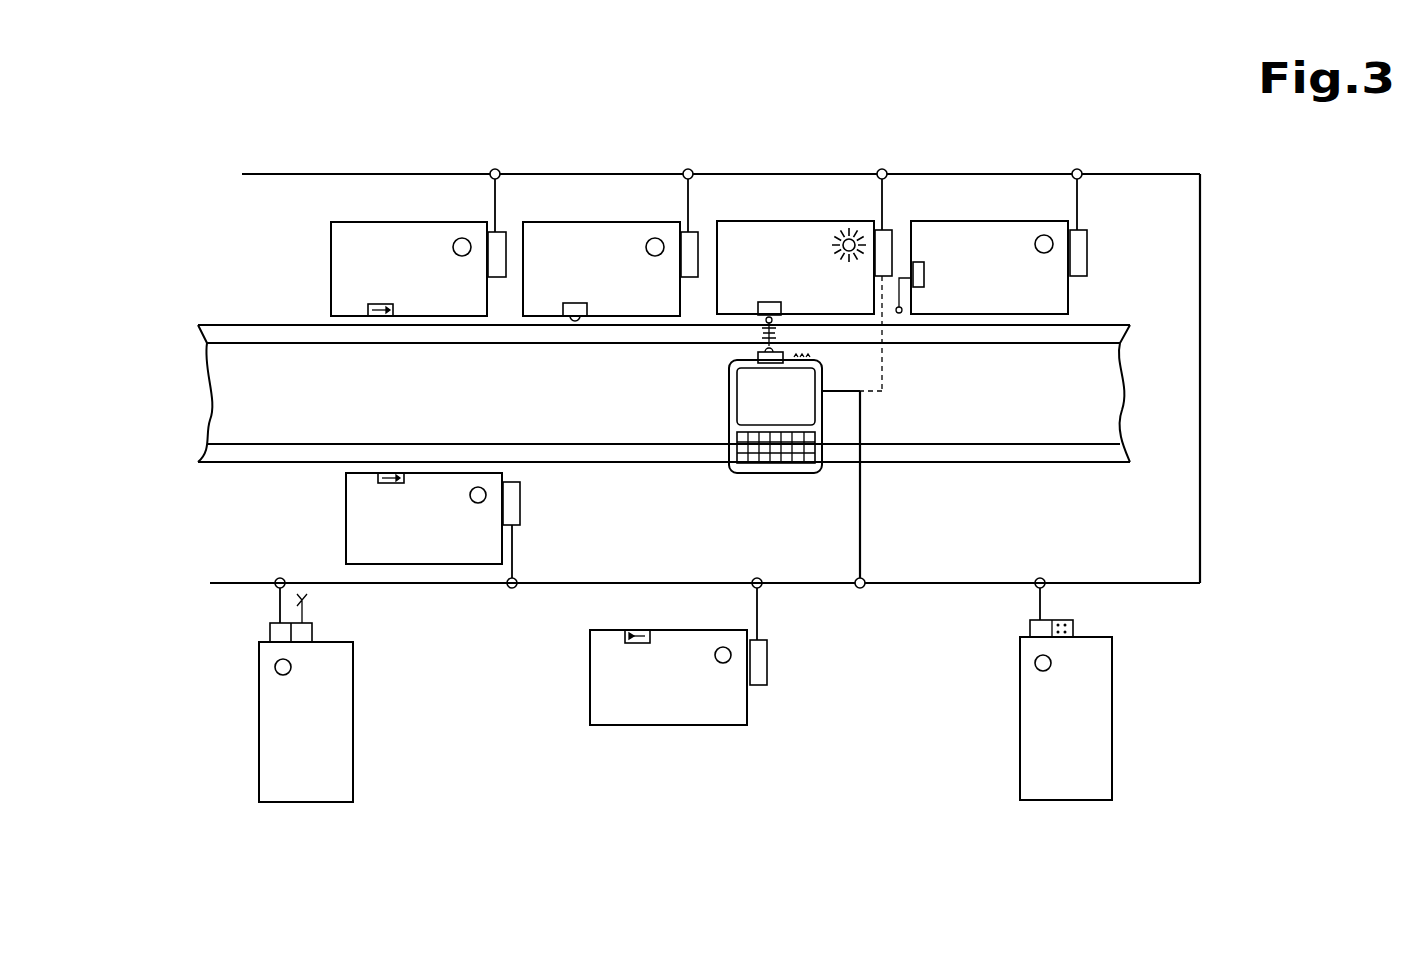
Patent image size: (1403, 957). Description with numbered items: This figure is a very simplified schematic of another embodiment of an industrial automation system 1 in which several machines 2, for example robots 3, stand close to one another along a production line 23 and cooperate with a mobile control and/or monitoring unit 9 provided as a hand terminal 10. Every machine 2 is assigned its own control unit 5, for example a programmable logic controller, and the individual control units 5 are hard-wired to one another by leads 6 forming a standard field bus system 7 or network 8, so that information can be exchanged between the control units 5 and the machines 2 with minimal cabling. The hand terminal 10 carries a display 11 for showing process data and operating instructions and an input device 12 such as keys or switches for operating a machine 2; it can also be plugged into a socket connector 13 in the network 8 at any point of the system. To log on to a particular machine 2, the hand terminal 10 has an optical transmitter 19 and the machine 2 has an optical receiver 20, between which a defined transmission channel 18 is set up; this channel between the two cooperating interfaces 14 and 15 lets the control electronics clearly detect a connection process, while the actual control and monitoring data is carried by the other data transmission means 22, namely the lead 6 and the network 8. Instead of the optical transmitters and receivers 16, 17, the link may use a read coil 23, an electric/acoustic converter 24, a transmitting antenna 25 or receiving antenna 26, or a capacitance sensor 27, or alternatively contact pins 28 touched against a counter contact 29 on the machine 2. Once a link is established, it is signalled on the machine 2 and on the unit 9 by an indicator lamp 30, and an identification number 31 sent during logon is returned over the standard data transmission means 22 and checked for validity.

The industrial automation system 1 is at (255, 118).
The machine 2 is at (350, 190).
The robot 3 is at (388, 246).
The control unit 5 is at (496, 232).
The lead 6 is at (865, 490).
The bus system 7 is at (878, 628).
The network 8 is at (915, 633).
The control and/or monitoring unit 9 is at (755, 238).
The hand terminal 10 is at (735, 425).
The display 11 is at (800, 400).
The input device 12 is at (735, 447).
The socket connector 13 is at (872, 578).
The interface 14 is at (800, 335).
The interface 15 is at (775, 300).
The transmitter and/or receiver 16 is at (814, 343).
The optical transmitter and/or receiver 17 is at (766, 268).
The transmission channel 18 is at (732, 338).
The optical transmitter 19 is at (758, 357).
The optical receiver 20 is at (757, 302).
The data transmission means 22 is at (824, 530).
The read coil 23 is at (395, 478).
The electric/acoustic or acoustic/electric converter 24 is at (628, 637).
The transmitting antenna 25 is at (310, 609).
The receiving antenna 26 is at (903, 302).
The capacitance sensor 27 is at (380, 304).
The contact pin 28 is at (822, 354).
The counter contact 29 is at (1073, 622).
The indicator lamp 30 is at (657, 245).
The identification number 31 is at (732, 325).